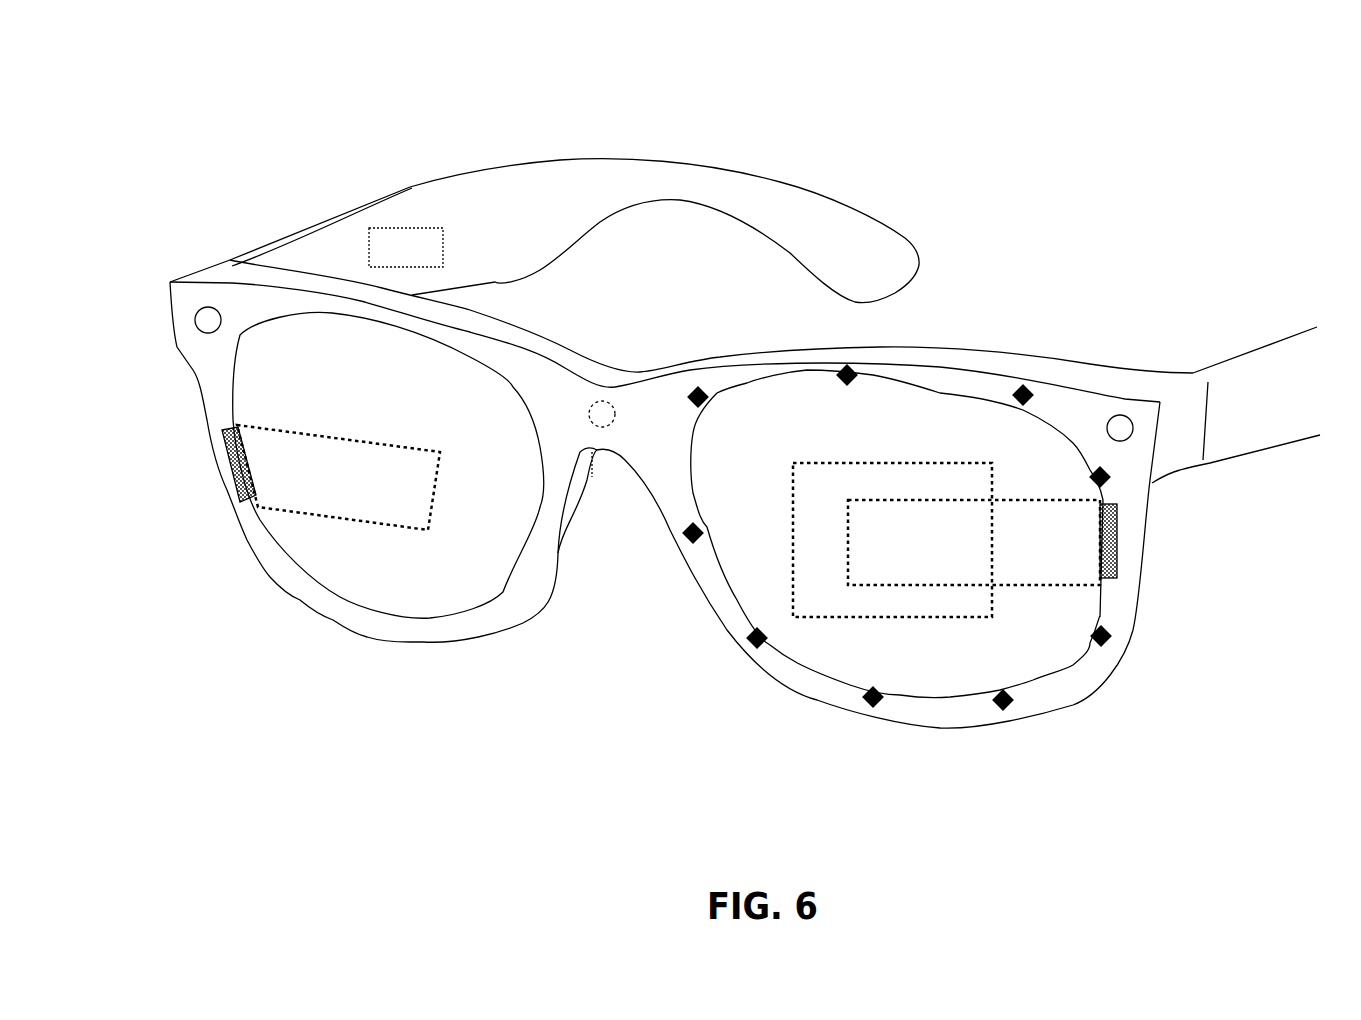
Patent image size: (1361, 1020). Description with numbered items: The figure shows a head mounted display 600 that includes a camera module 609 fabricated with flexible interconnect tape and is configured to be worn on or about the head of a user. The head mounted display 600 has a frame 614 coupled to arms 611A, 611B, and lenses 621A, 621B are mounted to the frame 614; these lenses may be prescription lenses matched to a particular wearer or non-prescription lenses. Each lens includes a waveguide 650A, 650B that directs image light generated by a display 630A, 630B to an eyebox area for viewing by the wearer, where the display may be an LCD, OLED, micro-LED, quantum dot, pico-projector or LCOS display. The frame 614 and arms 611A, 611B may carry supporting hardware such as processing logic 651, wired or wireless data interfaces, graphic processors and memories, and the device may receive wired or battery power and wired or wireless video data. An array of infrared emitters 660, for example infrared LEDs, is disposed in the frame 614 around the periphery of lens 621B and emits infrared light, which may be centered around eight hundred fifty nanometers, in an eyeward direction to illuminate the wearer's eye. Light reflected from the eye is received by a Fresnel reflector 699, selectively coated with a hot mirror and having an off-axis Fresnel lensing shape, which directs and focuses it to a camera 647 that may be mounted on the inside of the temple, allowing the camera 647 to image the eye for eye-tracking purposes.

The head mounted display 600 is at (1142, 48).
The camera module 609 is at (207, 318).
The arm 611A is at (556, 227).
The arm 611B is at (1281, 414).
The frame 614 is at (650, 457).
The lens 621A is at (505, 508).
The lens 621B is at (927, 424).
The display 630A is at (238, 472).
The display 630B is at (1117, 547).
The camera 647 is at (602, 414).
The waveguide 650A is at (270, 427).
The waveguide 650B is at (1098, 585).
The processing logic 651 is at (412, 248).
The infrared emitters 660 is at (836, 382).
The Fresnel reflector 699 is at (793, 503).